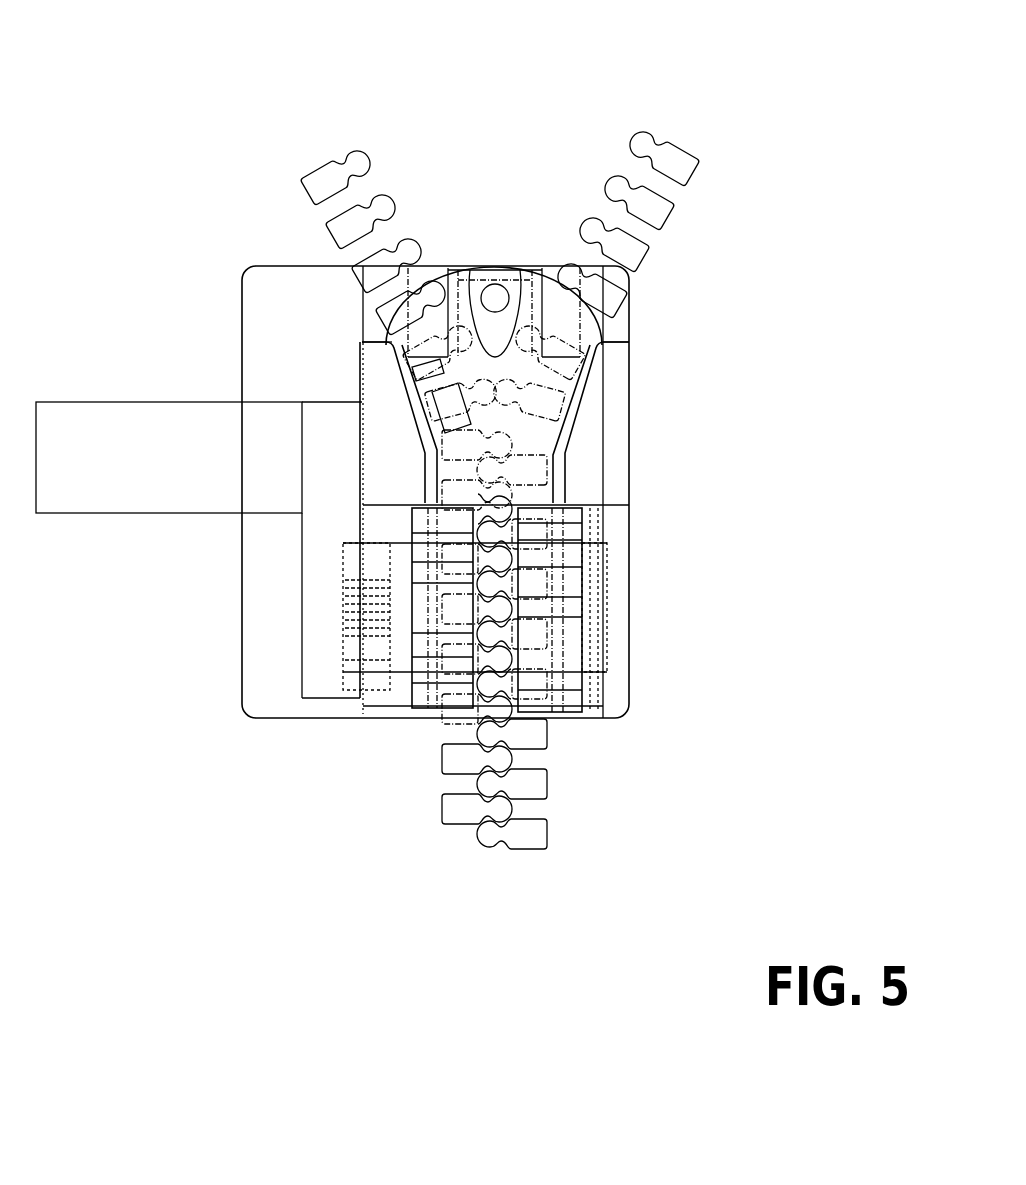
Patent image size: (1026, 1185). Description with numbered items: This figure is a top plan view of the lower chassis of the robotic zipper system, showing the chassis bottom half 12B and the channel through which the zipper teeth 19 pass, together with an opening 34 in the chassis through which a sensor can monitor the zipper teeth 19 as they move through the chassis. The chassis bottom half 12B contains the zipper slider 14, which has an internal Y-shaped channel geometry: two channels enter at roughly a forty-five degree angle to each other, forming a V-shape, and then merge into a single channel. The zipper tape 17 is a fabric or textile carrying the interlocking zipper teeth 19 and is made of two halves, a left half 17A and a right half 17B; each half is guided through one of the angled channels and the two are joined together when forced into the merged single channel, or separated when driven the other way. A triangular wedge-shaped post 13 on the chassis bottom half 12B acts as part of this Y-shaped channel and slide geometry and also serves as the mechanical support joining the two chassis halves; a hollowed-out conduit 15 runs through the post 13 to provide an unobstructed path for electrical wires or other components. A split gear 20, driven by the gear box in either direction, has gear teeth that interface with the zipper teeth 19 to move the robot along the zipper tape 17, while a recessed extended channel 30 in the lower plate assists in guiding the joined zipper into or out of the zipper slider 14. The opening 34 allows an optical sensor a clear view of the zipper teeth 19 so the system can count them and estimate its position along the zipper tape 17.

The chassis bottom half 12B is at (240, 388).
The post 13 is at (517, 275).
The zipper slider 14 is at (523, 388).
The conduit 15 is at (488, 286).
The zipper tape 17 is at (581, 870).
The left half 17A is at (313, 157).
The right half 17B is at (676, 174).
The zipper teeth 19 is at (657, 212).
The split gear 20 is at (583, 570).
The recessed extended channel 30 is at (431, 724).
The opening 34 is at (413, 397).